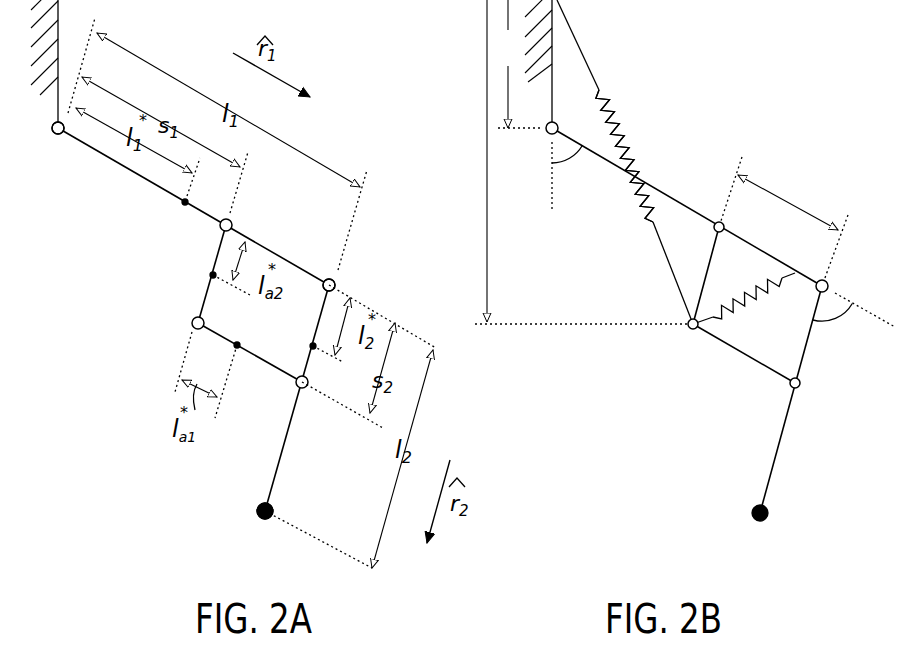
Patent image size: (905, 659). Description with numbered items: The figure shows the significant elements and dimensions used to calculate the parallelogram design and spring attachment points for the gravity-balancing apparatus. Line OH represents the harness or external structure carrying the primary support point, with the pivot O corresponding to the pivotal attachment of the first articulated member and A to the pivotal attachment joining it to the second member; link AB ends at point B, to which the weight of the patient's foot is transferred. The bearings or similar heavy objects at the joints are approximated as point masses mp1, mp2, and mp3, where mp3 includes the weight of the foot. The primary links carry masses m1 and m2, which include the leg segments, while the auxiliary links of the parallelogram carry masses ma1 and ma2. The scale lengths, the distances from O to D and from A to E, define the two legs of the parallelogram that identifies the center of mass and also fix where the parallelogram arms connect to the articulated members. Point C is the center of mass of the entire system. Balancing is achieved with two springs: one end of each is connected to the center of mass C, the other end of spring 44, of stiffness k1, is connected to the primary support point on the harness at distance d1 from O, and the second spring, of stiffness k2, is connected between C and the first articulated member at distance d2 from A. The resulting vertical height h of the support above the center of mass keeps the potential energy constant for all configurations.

In FIG. 2B, the spring 44 is at (619, 98).
In FIG. 2B, the stiffness of the first spring k1 is at (620, 122).
In FIG. 2B, the stiffness of the second spring k2 is at (750, 295).
In FIG. 2A, the pivotal attachment point O is at (45, 133).
In FIG. 2B, the pivotal attachment point O is at (544, 138).
In FIG. 2A, the pivotal attachment point A is at (339, 285).
In FIG. 2B, the pivotal attachment point A is at (835, 277).
In FIG. 2A, the end point B is at (265, 529).
In FIG. 2B, the end point B is at (769, 520).
In FIG. 2A, the center of mass point C is at (187, 323).
In FIG. 2B, the center of mass point C is at (681, 311).
In FIG. 2A, the point D is at (236, 217).
In FIG. 2A, the point E is at (294, 389).
In FIG. 2A, the first point mass mp1 is at (58, 135).
In FIG. 2A, the second point mass mp2 is at (326, 278).
In FIG. 2A, the third point mass mp3 is at (262, 511).
In FIG. 2A, the mass of the first primary link m1 is at (183, 204).
In FIG. 2A, the mass of the second primary link m2 is at (310, 345).
In FIG. 2A, the mass of the first auxiliary link ma1 is at (237, 346).
In FIG. 2A, the mass of the second auxiliary link ma2 is at (210, 275).
In FIG. 2B, the height h is at (487, 205).
In FIG. 2B, the distance d1 is at (518, 64).
In FIG. 2B, the distance d2 is at (788, 202).